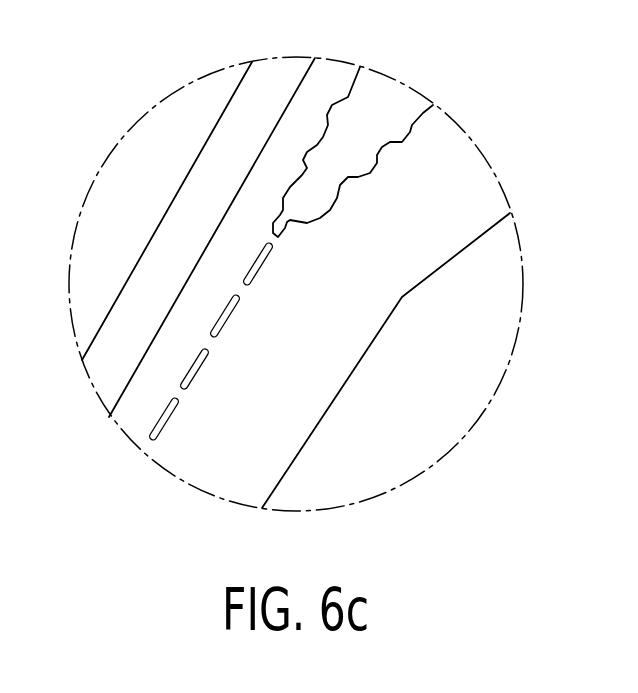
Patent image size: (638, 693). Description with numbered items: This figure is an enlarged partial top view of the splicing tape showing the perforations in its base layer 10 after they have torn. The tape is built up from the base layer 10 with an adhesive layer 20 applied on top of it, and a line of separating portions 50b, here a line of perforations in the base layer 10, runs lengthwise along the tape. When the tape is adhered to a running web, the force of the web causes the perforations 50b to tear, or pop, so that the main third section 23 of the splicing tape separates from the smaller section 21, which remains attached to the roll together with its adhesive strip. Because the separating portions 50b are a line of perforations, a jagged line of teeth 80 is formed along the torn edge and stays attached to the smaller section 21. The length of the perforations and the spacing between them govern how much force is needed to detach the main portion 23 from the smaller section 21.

The base layer 10 is at (440, 242).
The adhesive layer 20 is at (203, 183).
The section 21 is at (228, 483).
The third section 23 is at (137, 430).
The separating portions 50b is at (175, 412).
The lines of teeth 80 is at (383, 148).